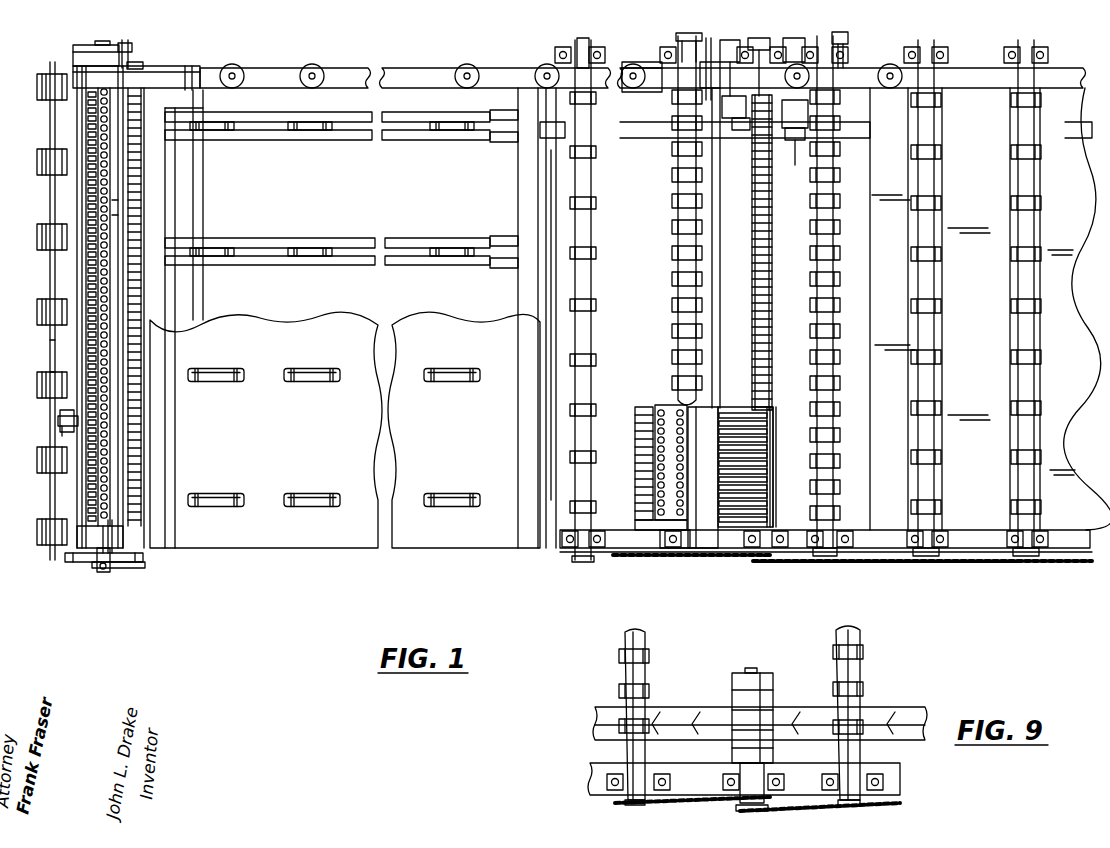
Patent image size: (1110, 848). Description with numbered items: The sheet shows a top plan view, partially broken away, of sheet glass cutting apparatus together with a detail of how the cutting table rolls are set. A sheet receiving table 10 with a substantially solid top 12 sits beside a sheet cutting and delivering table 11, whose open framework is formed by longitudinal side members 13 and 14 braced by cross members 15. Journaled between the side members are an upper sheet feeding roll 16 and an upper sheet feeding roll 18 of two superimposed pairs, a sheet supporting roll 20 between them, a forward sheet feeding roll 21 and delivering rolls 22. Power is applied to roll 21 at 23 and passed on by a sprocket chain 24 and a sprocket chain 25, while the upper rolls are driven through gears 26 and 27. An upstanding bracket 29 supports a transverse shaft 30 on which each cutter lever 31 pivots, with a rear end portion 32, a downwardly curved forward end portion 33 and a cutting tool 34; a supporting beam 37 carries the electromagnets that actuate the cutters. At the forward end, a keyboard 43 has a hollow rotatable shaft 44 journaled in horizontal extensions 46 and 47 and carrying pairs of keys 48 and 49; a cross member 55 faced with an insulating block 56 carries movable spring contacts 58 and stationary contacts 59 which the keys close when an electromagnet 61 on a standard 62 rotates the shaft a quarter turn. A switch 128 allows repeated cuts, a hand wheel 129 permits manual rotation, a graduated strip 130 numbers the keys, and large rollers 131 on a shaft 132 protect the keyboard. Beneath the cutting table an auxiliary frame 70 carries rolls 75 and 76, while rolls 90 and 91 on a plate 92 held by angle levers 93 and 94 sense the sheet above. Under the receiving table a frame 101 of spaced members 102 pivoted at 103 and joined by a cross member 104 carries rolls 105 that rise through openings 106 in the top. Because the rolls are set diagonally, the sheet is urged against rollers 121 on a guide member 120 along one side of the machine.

In FIG. 1, the sheet receiving table 10 is at (445, 542).
In FIG. 1, the sheet cutting and delivering table 11 is at (736, 560).
In FIG. 1, the top 12 is at (232, 540).
In FIG. 1, the side member 13 is at (640, 90).
In FIG. 1, the side member 14 is at (618, 546).
In FIG. 9, the side member 14 is at (600, 766).
In FIG. 1, the cross member 15 is at (558, 248).
In FIG. 1, the sheet feeding roll 16 is at (676, 282).
In FIG. 9, the sheet feeding roll 16 is at (648, 680).
In FIG. 1, the sheet feeding roll 18 is at (835, 304).
In FIG. 9, the sheet feeding roll 18 is at (860, 668).
In FIG. 1, the sheet supporting roll 20 is at (776, 312).
In FIG. 9, the sheet supporting roll 20 is at (770, 684).
In FIG. 1, the sheet feeding roll 21 is at (592, 292).
In FIG. 1, the delivering roll 22 is at (1008, 300).
In FIG. 1, the power application point 23 is at (607, 24).
In FIG. 1, the sprocket chain 24 is at (697, 558).
In FIG. 9, the sprocket chain 24 is at (612, 803).
In FIG. 1, the sprocket chain 25 is at (856, 563).
In FIG. 9, the sprocket chain 25 is at (898, 803).
In FIG. 1, the gear 26 is at (676, 44).
In FIG. 1, the gear 27 is at (846, 42).
In FIG. 1, the upstanding bracket 29 is at (676, 546).
In FIG. 1, the transverse shaft 30 is at (720, 312).
In FIG. 1, the lever 31 is at (727, 408).
In FIG. 1, the rear end portion 32 is at (648, 405).
In FIG. 1, the downwardly curved forward end portion 33 is at (760, 407).
In FIG. 1, the cutting tool 34 is at (774, 400).
In FIG. 1, the supporting beam 37 is at (713, 546).
In FIG. 1, the keyboard 43 is at (112, 210).
In FIG. 1, the hollow rotatable shaft 44 is at (97, 565).
In FIG. 1, the horizontal extension 46 is at (90, 66).
In FIG. 1, the horizontal extension 47 is at (82, 560).
In FIG. 1, the key 48 is at (113, 545).
In FIG. 1, the key 49 is at (106, 552).
In FIG. 1, the cross member 55 is at (60, 426).
In FIG. 1, the insulating block 56 is at (88, 196).
In FIG. 1, the movable spring contact 58 is at (100, 523).
In FIG. 1, the stationary contact 59 is at (80, 266).
In FIG. 1, the electromagnet 61 is at (108, 48).
In FIG. 1, the standard 62 is at (143, 63).
In FIG. 1, the auxiliary frame 70 is at (650, 140).
In FIG. 9, the auxiliary frame 70 is at (890, 712).
In FIG. 1, the roll 75 is at (738, 120).
In FIG. 1, the roll 76 is at (806, 142).
In FIG. 1, the roll 90 is at (746, 132).
In FIG. 1, the roll 91 is at (800, 130).
In FIG. 1, the plate 92 is at (720, 90).
In FIG. 1, the angle lever 93 is at (754, 44).
In FIG. 1, the angle lever 94 is at (786, 55).
In FIG. 1, the frame 101 is at (250, 238).
In FIG. 1, the spaced members 102 is at (375, 246).
In FIG. 1, the pivot 103 is at (496, 266).
In FIG. 1, the cross member 104 is at (172, 224).
In FIG. 1, the roll 105 is at (300, 264).
In FIG. 1, the opening 106 is at (314, 508).
In FIG. 1, the guide member 120 is at (365, 72).
In FIG. 1, the roller 121 is at (238, 64).
In FIG. 1, the switch 128 is at (62, 414).
In FIG. 1, the hand wheel 129 is at (130, 568).
In FIG. 1, the graduated strip 130 is at (144, 308).
In FIG. 1, the roller 131 is at (38, 318).
In FIG. 1, the shaft 132 is at (50, 362).